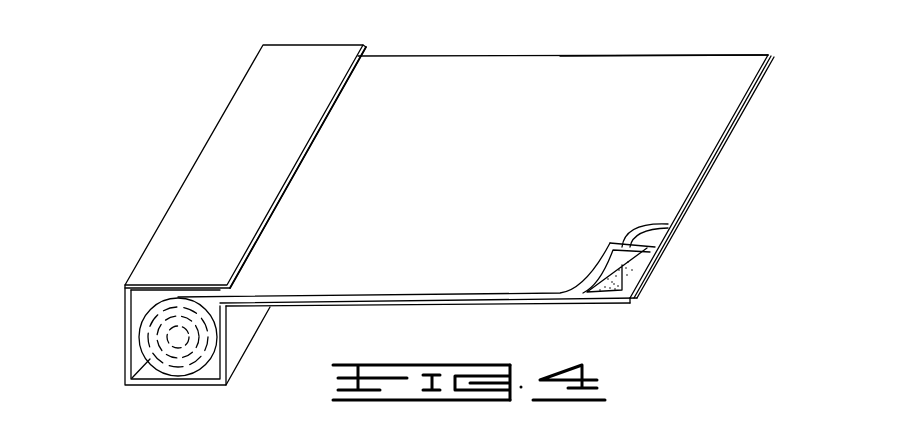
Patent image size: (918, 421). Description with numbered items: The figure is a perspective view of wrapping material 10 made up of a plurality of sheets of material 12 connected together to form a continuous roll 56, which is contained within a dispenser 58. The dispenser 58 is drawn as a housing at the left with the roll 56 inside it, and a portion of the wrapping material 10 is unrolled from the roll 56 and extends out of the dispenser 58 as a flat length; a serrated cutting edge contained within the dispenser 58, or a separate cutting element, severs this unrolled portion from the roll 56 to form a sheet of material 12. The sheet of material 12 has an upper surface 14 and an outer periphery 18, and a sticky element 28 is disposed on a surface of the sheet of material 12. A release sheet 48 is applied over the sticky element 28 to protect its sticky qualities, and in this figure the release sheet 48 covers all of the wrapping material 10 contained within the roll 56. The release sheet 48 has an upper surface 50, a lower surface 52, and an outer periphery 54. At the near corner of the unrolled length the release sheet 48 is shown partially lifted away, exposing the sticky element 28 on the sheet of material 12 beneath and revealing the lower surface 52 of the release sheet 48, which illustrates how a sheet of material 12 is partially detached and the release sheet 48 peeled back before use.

The wrapping material 10 is at (512, 37).
The sheet of material 12 is at (650, 273).
The upper surface 14 is at (645, 258).
The outer periphery 18 is at (637, 296).
The sticky element 28 is at (612, 280).
The release sheet 48 is at (547, 68).
The upper surface 50 is at (637, 68).
The lower surface 52 is at (660, 227).
The outer periphery 54 is at (730, 128).
The roll 56 is at (163, 332).
The dispenser 58 is at (322, 62).